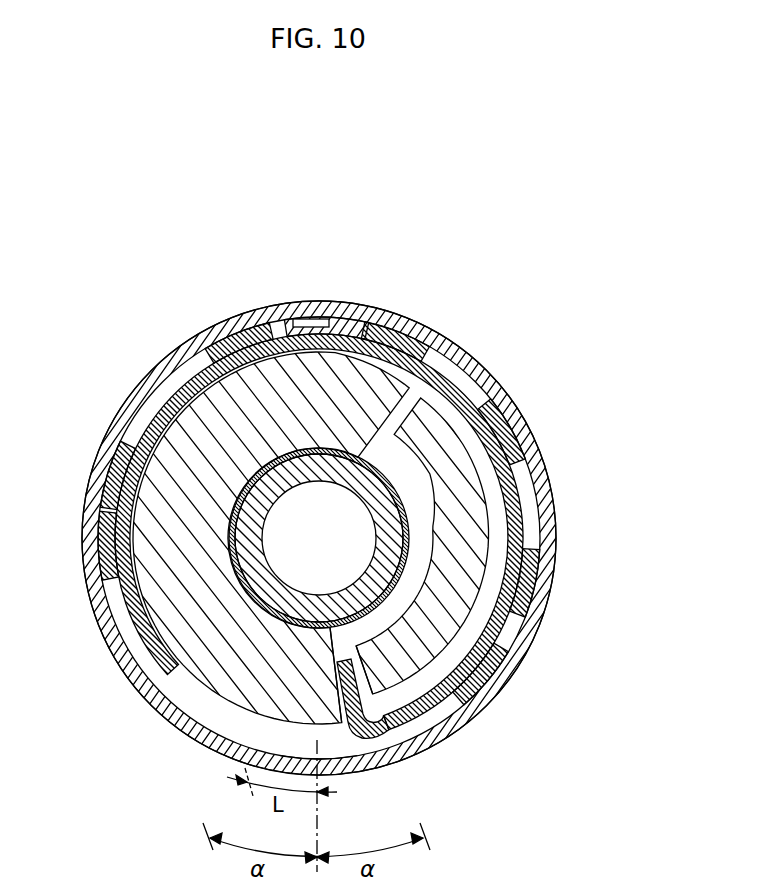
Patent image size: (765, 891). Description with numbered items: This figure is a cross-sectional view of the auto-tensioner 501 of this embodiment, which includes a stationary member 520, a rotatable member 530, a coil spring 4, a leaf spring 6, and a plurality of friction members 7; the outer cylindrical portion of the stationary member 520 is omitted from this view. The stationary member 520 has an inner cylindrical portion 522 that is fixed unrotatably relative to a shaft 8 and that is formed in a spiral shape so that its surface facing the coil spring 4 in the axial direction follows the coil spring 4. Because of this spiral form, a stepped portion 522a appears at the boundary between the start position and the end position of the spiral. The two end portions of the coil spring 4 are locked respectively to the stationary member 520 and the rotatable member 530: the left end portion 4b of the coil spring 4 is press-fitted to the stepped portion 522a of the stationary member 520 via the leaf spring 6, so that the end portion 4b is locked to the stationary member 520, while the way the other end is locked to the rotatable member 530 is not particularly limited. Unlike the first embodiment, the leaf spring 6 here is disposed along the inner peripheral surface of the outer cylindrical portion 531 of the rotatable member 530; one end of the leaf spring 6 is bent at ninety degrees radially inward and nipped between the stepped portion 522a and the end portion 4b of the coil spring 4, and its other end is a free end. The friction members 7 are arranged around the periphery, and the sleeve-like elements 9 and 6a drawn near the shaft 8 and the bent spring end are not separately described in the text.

The auto-tensioner 501 is at (126, 238).
The coil spring 4 is at (452, 598).
The end portion of the coil spring 4b is at (363, 682).
The leaf spring 6 is at (545, 494).
The housing recess 6a is at (380, 706).
The friction members 7 is at (238, 328).
The shaft 8 is at (229, 546).
The sleeve 9 is at (236, 536).
The inner cylindrical portion 522 is at (200, 375).
The stationary member 520 is at (382, 511).
The stepped portion 522a is at (333, 692).
The outer cylindrical portion 531 is at (317, 308).
The rotatable member 530 is at (382, 499).